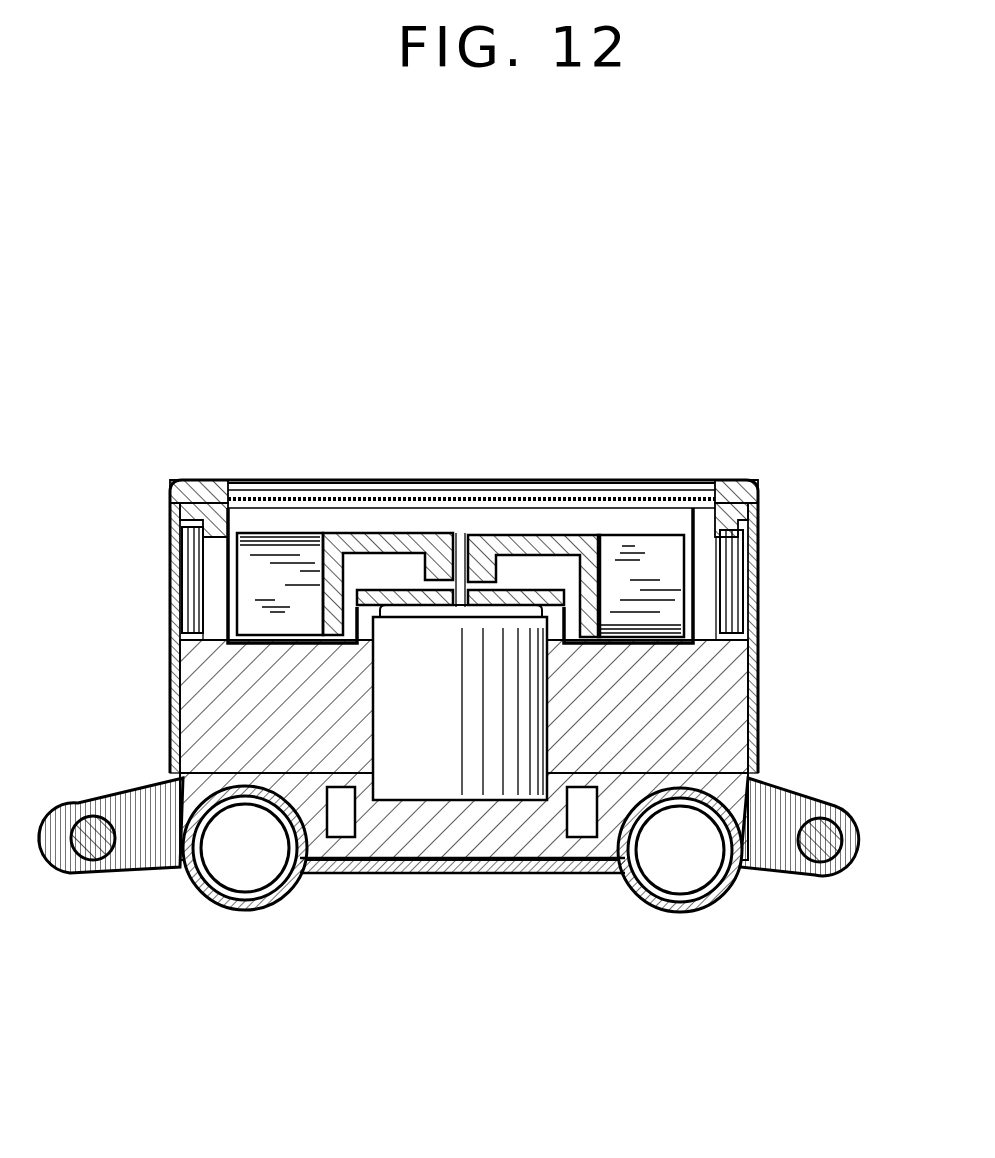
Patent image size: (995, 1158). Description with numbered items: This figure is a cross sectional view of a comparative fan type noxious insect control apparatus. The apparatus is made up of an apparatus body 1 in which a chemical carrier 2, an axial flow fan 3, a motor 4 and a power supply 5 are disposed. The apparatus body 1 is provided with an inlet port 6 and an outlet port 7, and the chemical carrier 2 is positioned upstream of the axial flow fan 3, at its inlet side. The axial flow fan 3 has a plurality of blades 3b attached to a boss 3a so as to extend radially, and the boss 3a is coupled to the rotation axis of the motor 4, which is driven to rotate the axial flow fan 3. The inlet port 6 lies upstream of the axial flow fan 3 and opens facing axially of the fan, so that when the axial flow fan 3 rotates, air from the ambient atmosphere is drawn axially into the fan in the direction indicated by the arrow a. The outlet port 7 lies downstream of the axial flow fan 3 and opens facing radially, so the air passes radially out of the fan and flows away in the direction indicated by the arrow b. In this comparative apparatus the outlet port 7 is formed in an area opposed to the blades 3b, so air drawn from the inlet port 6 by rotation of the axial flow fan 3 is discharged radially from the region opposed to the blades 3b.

The apparatus body 1 is at (766, 500).
The chemical carrier 2 is at (615, 485).
The axial flow fan 3 is at (459, 533).
The boss 3a is at (408, 533).
The blades 3b is at (310, 542).
The motor 4 is at (456, 770).
The power supply 5 is at (258, 856).
The inlet port 6 is at (515, 485).
The outlet port 7 is at (170, 558).
The arrow a is at (470, 432).
The arrow b is at (142, 588).